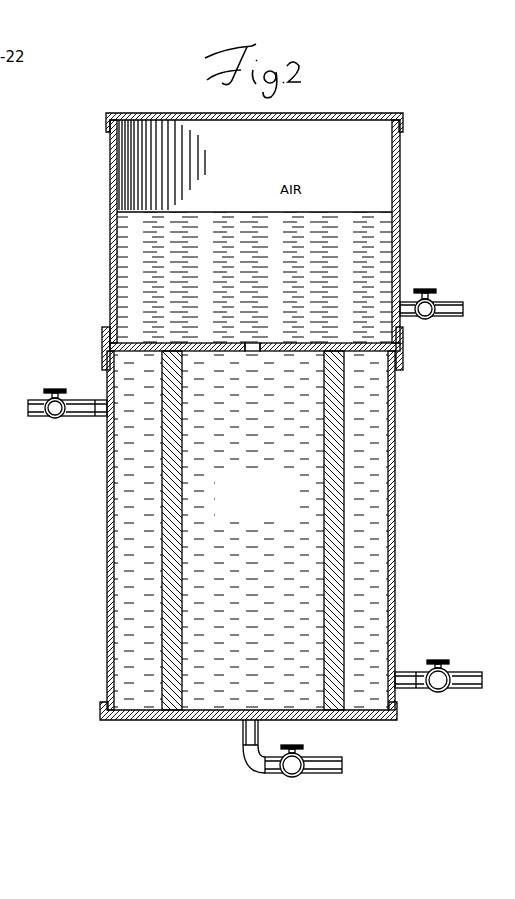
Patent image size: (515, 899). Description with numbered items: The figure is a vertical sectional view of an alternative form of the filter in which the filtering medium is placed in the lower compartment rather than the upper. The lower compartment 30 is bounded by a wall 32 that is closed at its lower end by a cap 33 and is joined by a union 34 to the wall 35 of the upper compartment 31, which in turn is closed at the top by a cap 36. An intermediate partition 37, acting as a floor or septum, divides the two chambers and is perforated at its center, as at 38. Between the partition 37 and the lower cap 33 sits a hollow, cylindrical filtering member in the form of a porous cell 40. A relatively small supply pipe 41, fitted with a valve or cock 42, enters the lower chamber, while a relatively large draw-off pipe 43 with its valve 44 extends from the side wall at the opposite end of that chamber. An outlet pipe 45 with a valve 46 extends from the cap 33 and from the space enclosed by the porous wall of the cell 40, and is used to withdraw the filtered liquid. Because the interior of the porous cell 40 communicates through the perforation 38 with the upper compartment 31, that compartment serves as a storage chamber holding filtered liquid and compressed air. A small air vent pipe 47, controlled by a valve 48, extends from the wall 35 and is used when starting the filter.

The lower compartment 30 is at (231, 530).
The upper compartment 31 is at (140, 205).
The wall of the lower compartment 32 is at (108, 508).
The cap 33 is at (205, 725).
The union 34 is at (403, 355).
The wall of the upper compartment 35 is at (400, 243).
The cap 36 is at (300, 118).
The intermediate partition 37 is at (217, 343).
The perforation 38 is at (262, 346).
The porous cell 40 is at (172, 612).
The supply pipe 41 is at (33, 418).
The valve or cock 42 is at (58, 419).
The draw-off pipe 43 is at (455, 676).
The valve 44 is at (440, 694).
The outlet pipe 45 is at (323, 776).
The valve 46 is at (280, 773).
The air vent pipe 47 is at (452, 303).
The valve 48 is at (427, 290).